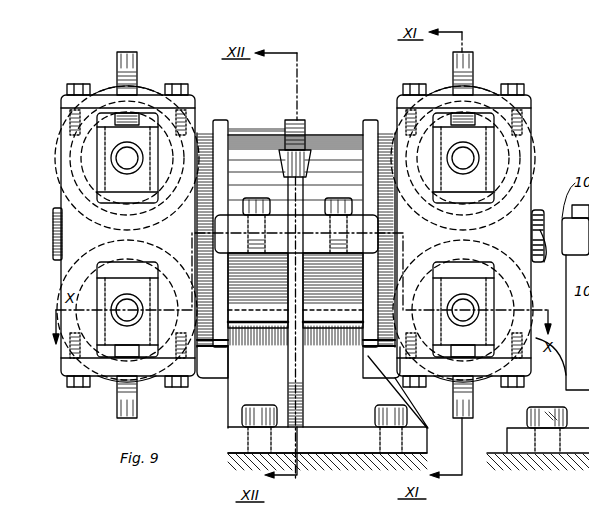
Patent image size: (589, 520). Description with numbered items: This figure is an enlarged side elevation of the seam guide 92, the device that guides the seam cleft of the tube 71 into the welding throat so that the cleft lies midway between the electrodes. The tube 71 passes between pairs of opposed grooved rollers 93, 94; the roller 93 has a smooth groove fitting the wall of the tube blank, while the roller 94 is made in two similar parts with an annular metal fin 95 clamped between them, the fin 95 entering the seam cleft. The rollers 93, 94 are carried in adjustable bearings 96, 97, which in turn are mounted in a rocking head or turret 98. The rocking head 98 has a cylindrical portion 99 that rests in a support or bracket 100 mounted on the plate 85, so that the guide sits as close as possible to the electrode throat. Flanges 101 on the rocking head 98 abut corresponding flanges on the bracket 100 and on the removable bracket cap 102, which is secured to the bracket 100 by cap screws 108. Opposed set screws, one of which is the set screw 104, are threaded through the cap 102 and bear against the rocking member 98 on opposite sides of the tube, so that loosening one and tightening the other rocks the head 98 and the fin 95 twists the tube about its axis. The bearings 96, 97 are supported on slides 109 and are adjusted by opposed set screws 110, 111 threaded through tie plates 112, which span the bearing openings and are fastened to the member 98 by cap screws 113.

The tube 71 is at (542, 208).
The plate 85 is at (351, 465).
The seam guide device 92 is at (270, 128).
The grooved roller 93 is at (150, 385).
The grooved roller 94 is at (147, 92).
The annular metal fin 95 is at (112, 108).
The adjustable bearing 96 is at (117, 290).
The adjustable bearing 97 is at (145, 198).
The rocking head 98 is at (512, 198).
The cylindrical portion 99 is at (326, 340).
The support 100 is at (267, 340).
The flanges 101 is at (229, 352).
The bracket cap 102 is at (322, 146).
The set screw 104 is at (302, 120).
The cap screws 108 is at (236, 190).
The slides 109 is at (183, 120).
The set screw 110 is at (127, 55).
The set screw 111 is at (117, 407).
The tie plates 112 is at (195, 97).
The cap screws 113 is at (77, 84).